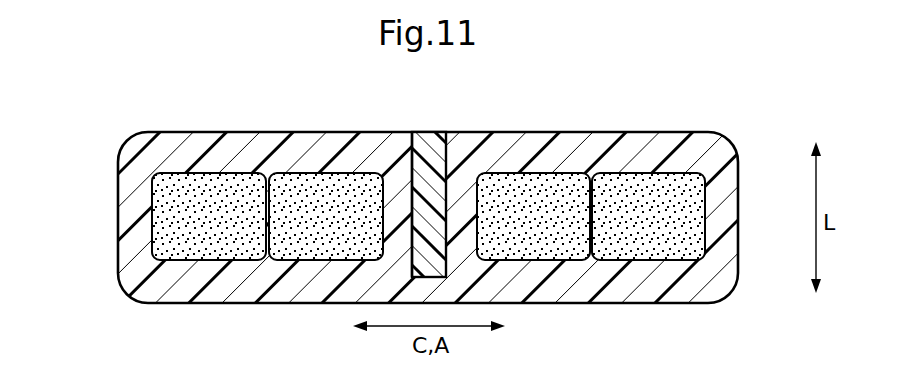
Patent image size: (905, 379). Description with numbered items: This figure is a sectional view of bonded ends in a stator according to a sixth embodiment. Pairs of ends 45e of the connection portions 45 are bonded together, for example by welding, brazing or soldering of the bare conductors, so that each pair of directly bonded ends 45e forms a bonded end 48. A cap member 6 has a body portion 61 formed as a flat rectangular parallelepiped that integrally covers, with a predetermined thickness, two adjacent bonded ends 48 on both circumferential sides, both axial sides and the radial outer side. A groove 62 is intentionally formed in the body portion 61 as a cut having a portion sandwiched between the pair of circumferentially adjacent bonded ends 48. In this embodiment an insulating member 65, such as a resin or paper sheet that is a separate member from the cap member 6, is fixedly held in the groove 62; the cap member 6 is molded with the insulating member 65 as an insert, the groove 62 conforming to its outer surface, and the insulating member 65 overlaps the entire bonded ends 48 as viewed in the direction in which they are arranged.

The cap member 6 is at (450, 206).
The body portion 61 is at (728, 184).
The groove 62 is at (427, 165).
The insulating member 65 is at (421, 177).
The bonded end 48 is at (428, 219).
The end 45e is at (633, 262).
The connection portion 45 is at (591, 265).